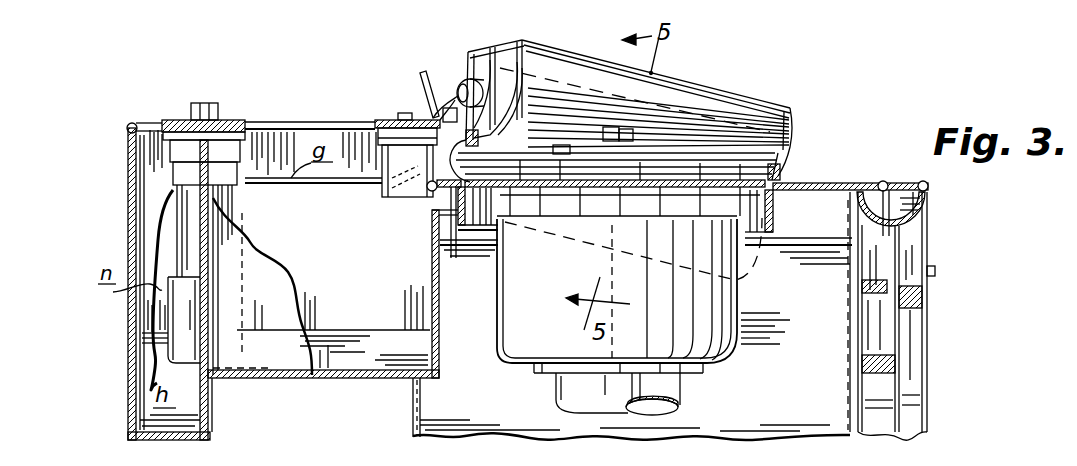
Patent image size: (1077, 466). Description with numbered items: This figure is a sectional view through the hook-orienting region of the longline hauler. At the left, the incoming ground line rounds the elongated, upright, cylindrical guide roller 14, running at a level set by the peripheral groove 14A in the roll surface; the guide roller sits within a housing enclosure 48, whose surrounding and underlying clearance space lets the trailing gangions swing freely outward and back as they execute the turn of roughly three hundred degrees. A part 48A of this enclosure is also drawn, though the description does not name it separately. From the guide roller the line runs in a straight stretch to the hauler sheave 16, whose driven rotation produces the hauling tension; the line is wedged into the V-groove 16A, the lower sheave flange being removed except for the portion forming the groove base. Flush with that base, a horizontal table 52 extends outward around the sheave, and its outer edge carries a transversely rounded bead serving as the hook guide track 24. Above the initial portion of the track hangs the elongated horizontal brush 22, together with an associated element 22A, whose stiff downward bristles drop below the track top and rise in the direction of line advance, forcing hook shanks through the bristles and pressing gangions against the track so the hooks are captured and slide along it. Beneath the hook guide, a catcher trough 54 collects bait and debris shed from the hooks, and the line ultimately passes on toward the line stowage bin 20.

The guide roller 14 is at (163, 104).
The peripheral groove 14A is at (217, 195).
The hauler sheave 16 is at (733, 155).
The V-groove 16A is at (780, 172).
The line stowage bin 20 is at (410, 428).
The brush 22 is at (388, 106).
The latch plate 22A is at (433, 188).
The hook guide track 24 is at (433, 190).
The housing enclosure 48 is at (212, 378).
The housing liner 48A is at (148, 248).
The horizontal table 52 is at (530, 282).
The catcher trough 54 is at (917, 212).